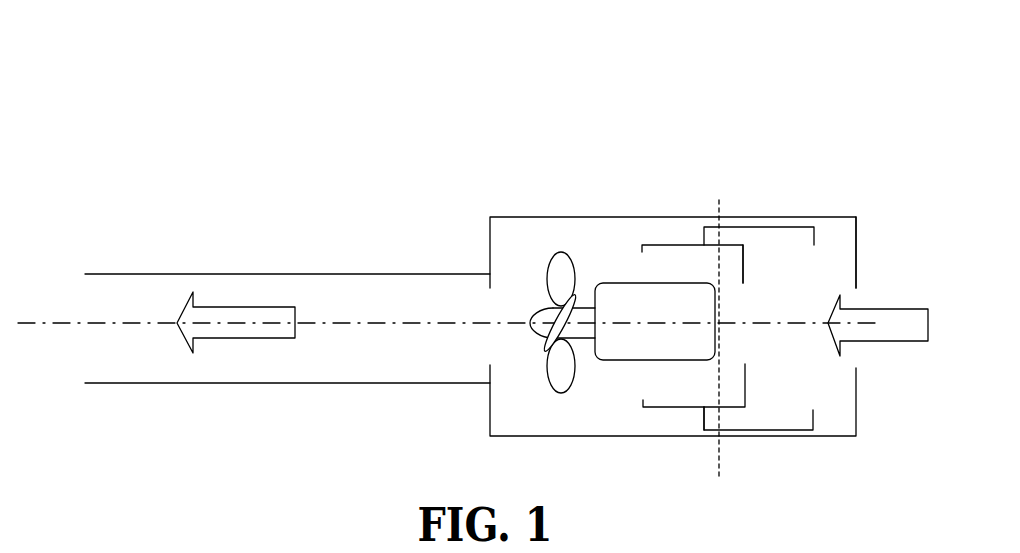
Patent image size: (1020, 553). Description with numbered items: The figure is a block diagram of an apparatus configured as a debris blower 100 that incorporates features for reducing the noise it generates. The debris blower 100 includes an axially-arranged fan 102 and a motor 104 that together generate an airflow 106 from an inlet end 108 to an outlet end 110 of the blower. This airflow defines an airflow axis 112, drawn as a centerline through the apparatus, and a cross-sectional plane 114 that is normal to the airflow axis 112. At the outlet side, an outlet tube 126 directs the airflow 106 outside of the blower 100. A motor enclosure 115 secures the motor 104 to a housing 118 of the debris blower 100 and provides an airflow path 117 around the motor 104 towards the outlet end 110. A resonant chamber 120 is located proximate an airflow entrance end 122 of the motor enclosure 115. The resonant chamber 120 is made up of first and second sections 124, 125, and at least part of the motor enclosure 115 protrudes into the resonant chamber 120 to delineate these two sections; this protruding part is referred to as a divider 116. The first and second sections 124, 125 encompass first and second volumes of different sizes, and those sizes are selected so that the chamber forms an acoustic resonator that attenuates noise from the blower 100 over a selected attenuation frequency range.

The debris blower 100 is at (756, 126).
The axially-arranged fan 102 is at (568, 390).
The motor 104 is at (655, 321).
The airflow 106 is at (280, 340).
The inlet end 108 is at (863, 298).
The outlet end 110 is at (86, 297).
The airflow axis 112 is at (58, 325).
The cross-sectional plane 114 is at (718, 472).
The motor enclosure 115 is at (667, 410).
The divider 116 is at (733, 413).
The airflow path 117 is at (643, 270).
The housing 118 is at (847, 438).
The resonant chamber 120 is at (773, 228).
The airflow entrance end 122 is at (747, 313).
The first section 124 is at (737, 418).
The second section 125 is at (783, 412).
The outlet tube 126 is at (203, 373).